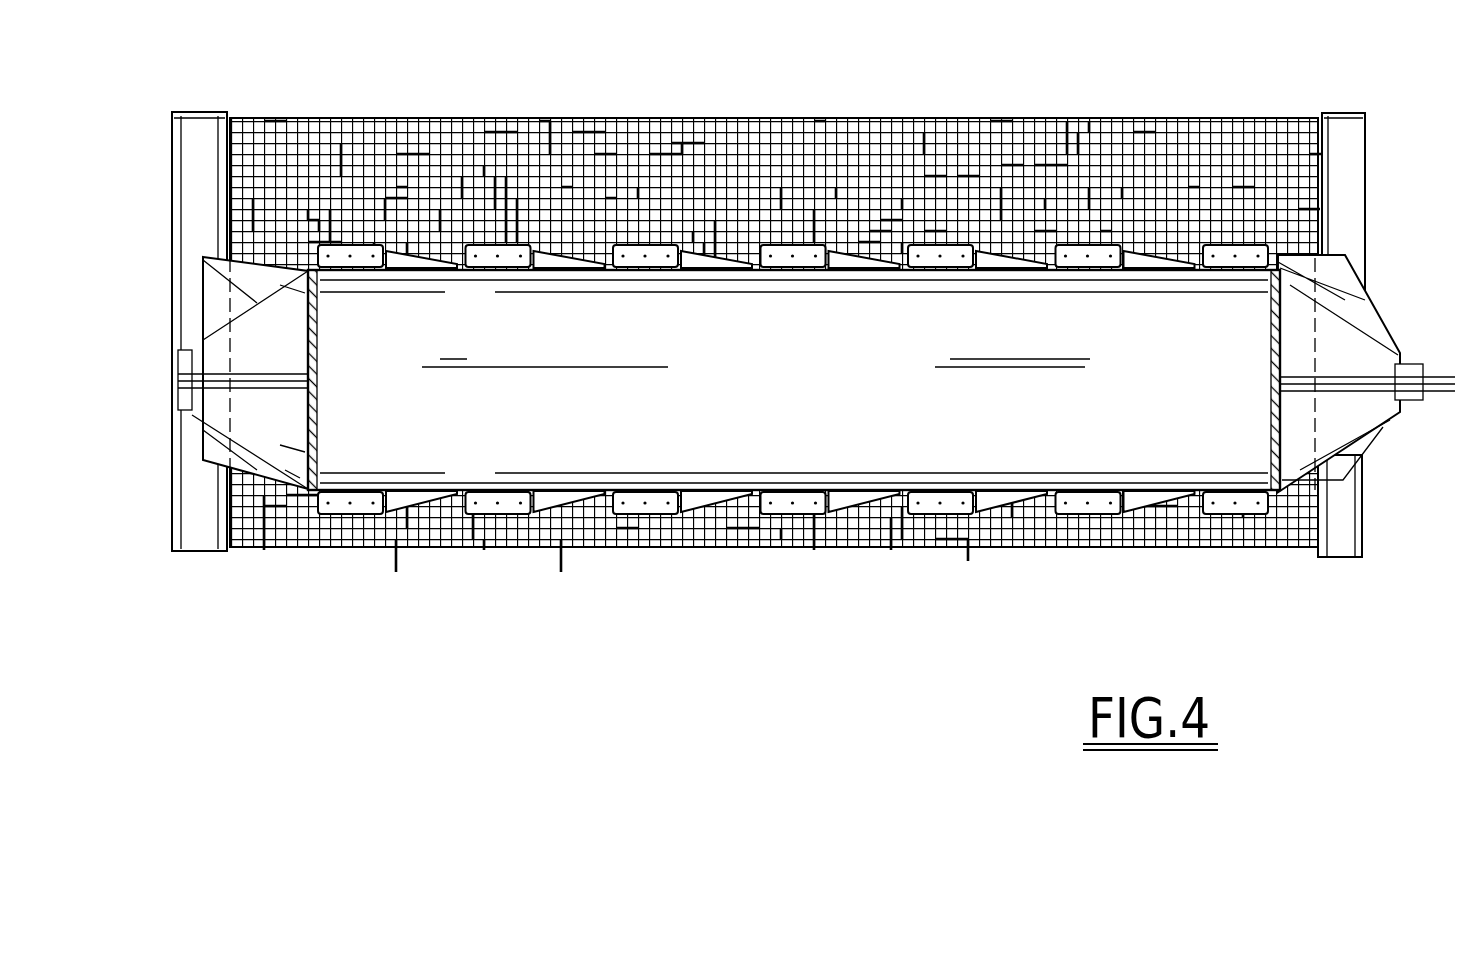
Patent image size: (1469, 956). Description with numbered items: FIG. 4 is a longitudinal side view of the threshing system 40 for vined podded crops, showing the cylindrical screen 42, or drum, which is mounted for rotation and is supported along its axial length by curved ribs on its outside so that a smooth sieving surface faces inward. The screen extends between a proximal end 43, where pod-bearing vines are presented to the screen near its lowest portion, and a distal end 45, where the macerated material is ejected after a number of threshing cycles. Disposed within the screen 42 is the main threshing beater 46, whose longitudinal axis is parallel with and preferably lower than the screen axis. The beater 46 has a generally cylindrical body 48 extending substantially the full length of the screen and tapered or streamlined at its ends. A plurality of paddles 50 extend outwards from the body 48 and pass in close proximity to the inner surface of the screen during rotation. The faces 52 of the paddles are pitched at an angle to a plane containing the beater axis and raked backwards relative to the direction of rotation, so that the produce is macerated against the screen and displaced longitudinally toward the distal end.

The system for threshing vined podded crops 40 is at (1022, 68).
The cylindrical screen 42 is at (1110, 528).
The proximal end 43 is at (1348, 213).
The distal end 45 is at (188, 190).
The main threshing beater 46 is at (1043, 494).
The cylindrical body 48 is at (890, 453).
The paddles 50 is at (727, 498).
The faces 52 is at (510, 500).